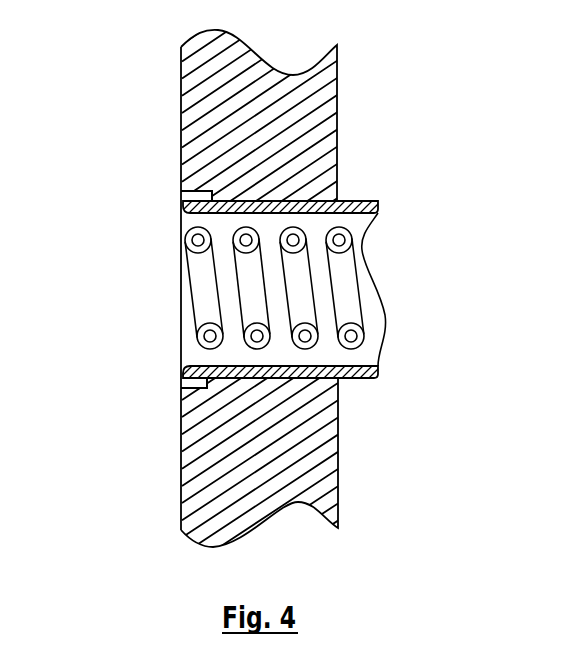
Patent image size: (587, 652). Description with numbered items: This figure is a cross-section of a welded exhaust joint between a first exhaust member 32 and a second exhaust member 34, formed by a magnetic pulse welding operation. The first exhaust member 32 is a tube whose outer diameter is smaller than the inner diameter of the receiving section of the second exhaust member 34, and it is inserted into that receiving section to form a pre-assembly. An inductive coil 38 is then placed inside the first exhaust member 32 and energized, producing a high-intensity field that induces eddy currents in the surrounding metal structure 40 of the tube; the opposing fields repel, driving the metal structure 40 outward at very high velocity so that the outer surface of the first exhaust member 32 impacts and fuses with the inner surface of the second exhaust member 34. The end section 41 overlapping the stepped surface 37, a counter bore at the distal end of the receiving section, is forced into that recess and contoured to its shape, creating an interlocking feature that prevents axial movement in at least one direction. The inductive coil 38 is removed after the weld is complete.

The first exhaust member 32 is at (300, 200).
The second exhaust member 34 is at (220, 428).
The stepped surface 37 is at (191, 192).
The inductive coil 38 is at (338, 272).
The metal structure 40 is at (213, 365).
The end section 41 is at (181, 200).